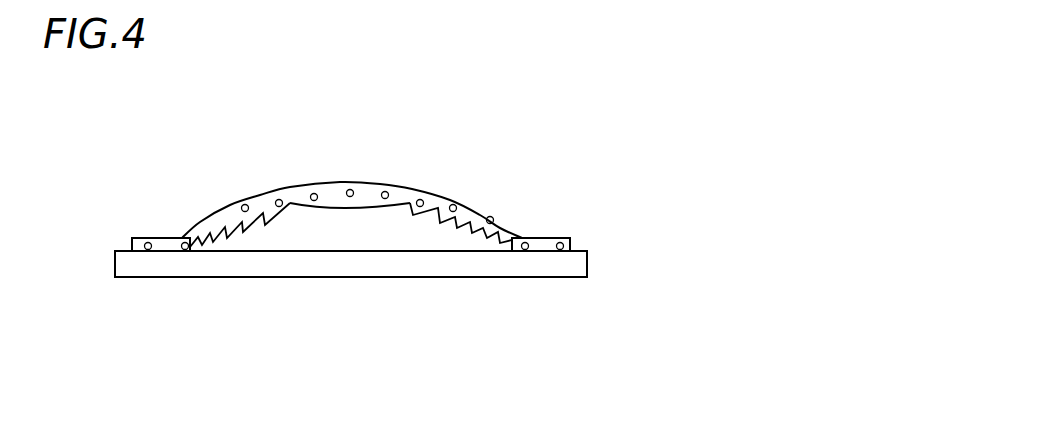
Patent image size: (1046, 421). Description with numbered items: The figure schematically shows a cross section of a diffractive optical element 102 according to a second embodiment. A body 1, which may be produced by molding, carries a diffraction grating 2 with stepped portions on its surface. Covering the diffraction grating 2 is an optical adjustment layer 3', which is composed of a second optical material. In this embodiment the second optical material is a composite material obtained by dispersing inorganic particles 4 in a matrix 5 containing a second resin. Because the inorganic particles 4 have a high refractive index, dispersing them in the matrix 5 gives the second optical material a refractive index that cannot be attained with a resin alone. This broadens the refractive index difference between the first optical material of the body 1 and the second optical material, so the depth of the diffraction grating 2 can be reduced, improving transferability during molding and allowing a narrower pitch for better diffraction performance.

The body 1 is at (213, 270).
The diffraction grating 2 is at (283, 216).
The optical adjustment layer 3' is at (367, 137).
The inorganic particles 4 is at (492, 213).
The matrix 5 is at (435, 200).
The diffractive optical element 102 is at (596, 192).